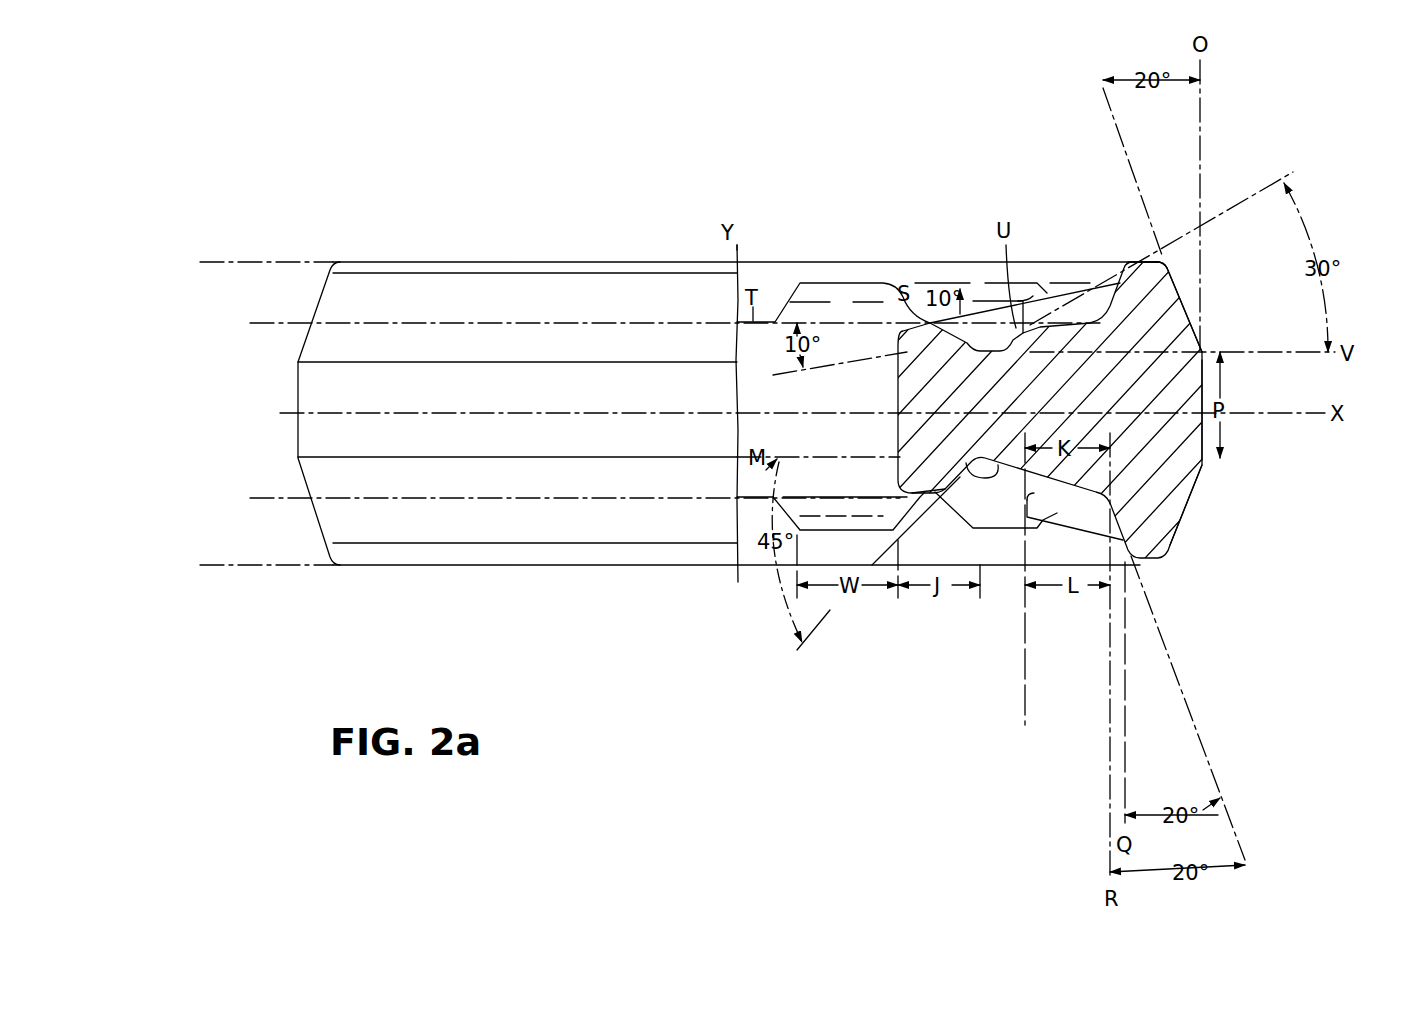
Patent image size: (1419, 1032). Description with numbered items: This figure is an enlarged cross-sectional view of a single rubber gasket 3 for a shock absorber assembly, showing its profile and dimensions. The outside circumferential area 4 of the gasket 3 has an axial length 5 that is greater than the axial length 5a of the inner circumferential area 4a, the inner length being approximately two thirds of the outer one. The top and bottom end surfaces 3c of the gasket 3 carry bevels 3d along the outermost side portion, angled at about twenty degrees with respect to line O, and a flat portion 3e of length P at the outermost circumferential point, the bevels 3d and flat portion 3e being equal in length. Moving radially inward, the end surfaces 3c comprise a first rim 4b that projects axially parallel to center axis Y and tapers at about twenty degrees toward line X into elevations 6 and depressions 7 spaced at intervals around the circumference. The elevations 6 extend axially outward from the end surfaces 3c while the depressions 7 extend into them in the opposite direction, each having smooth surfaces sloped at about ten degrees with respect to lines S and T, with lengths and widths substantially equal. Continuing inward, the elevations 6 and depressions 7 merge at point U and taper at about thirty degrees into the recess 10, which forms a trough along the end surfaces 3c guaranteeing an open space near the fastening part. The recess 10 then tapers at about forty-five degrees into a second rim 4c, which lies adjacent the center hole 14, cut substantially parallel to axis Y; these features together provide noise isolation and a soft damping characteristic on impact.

The rubber gasket 3 is at (1167, 308).
The end surfaces 3c is at (770, 214).
The bevels 3d is at (1187, 314).
The flat portion 3e is at (1212, 390).
The outside circumferential area 4 is at (1138, 262).
The inner circumferential area 4a is at (928, 325).
The first rim 4b is at (1152, 262).
The second rim 4c is at (933, 490).
The axial length 5 is at (207, 262).
The axial length 5a is at (258, 323).
The elevations 6 is at (830, 517).
The depressions 7 is at (940, 527).
The recess 10 is at (990, 507).
The center hole 14 is at (897, 380).